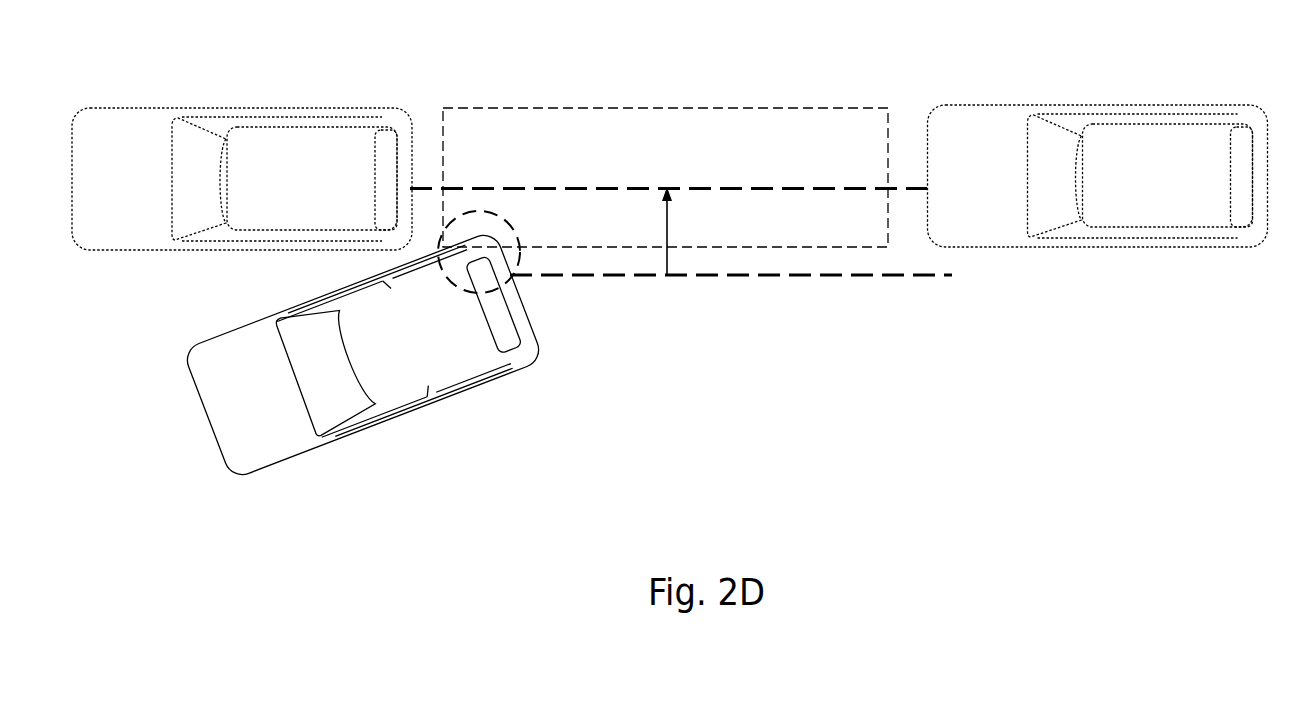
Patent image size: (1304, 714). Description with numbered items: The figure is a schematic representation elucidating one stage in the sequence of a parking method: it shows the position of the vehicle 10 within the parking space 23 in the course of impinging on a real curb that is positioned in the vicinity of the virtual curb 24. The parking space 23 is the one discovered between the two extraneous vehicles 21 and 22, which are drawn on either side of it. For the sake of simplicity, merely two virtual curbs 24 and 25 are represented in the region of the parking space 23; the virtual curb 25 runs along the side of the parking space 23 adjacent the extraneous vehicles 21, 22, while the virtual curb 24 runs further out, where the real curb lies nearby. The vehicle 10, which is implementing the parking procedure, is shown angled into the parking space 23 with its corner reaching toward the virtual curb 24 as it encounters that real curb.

The vehicle 10 is at (412, 332).
The extraneous vehicle 21 is at (306, 201).
The extraneous vehicle 22 is at (1153, 193).
The parking space 23 is at (496, 171).
The virtual curb 24 is at (740, 277).
The virtual curb 25 is at (852, 190).